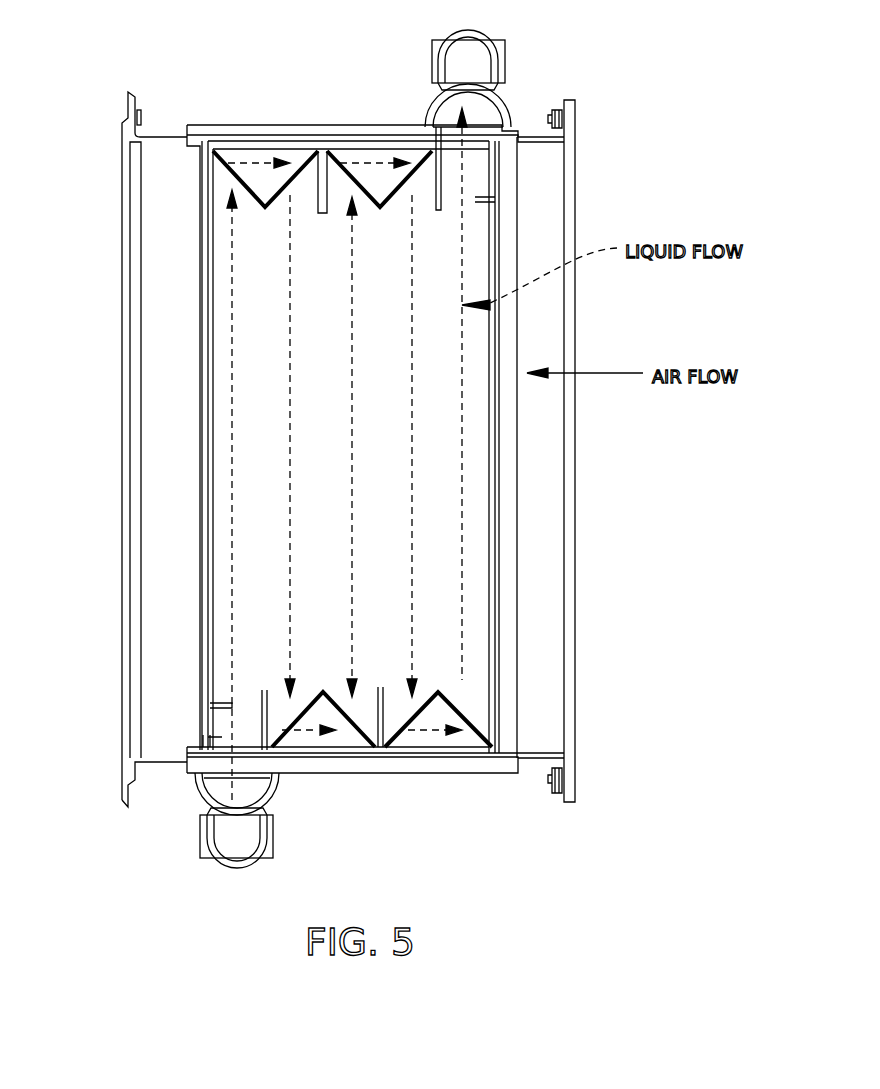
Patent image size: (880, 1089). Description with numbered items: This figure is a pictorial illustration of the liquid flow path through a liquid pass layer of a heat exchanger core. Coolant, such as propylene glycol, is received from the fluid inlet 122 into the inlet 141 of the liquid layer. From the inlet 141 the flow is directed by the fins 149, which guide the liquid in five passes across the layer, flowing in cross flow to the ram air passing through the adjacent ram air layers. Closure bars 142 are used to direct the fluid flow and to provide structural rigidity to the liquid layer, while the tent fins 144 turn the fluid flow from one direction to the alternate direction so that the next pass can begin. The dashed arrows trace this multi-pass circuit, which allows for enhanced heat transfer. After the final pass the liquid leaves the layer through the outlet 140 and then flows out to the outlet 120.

The outlet 120 is at (507, 50).
The outlet 140 is at (472, 135).
The fluid inlet 122 is at (207, 860).
The fins 149 is at (232, 570).
The inlet 141 is at (220, 737).
The closure bars 142 is at (268, 745).
The tent fins 144 is at (362, 738).